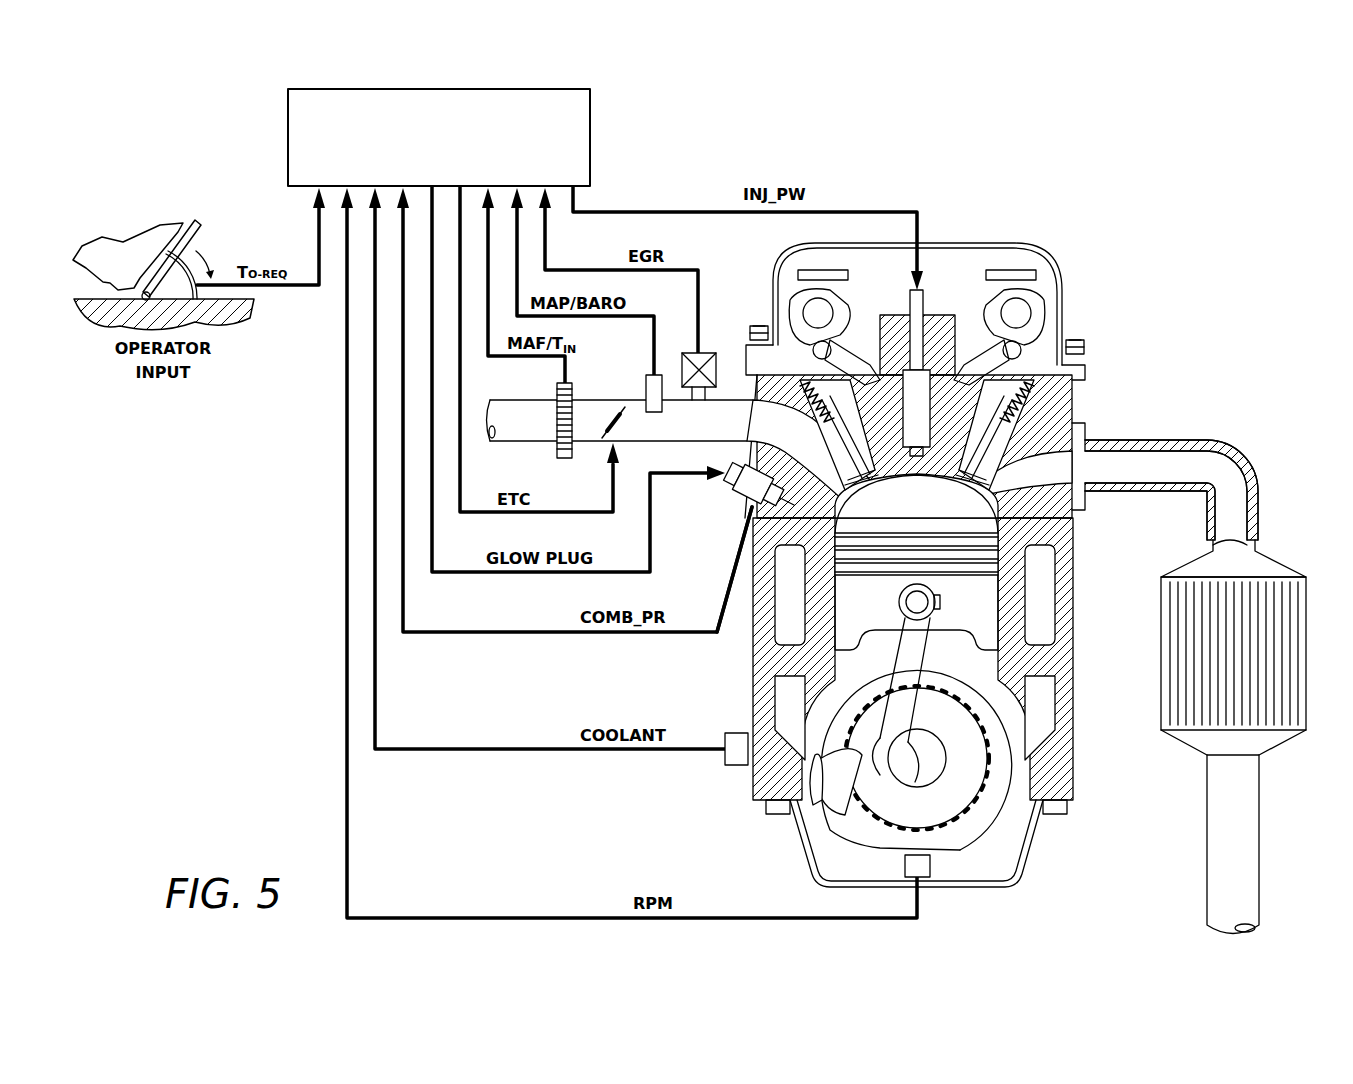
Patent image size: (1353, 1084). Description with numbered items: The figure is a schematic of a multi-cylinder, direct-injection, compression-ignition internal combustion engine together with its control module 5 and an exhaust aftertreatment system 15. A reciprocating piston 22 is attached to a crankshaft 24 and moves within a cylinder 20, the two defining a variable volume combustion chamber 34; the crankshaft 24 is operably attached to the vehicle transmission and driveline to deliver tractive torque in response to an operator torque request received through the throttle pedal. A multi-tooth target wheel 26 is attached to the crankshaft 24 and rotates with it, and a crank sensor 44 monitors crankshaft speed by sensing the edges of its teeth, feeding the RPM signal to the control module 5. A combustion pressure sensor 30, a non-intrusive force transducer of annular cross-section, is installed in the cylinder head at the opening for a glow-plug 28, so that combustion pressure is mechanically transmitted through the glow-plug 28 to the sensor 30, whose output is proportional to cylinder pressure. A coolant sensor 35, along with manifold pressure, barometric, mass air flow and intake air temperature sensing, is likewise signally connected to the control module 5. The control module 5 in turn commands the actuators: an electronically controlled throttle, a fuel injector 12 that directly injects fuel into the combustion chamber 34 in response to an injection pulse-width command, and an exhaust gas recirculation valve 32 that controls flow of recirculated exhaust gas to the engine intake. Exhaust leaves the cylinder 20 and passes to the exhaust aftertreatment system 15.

The control module 5 is at (565, 98).
The fuel injector 12 is at (920, 312).
The exhaust aftertreatment system 15 is at (1275, 572).
The cylinder 20 is at (1078, 519).
The piston 22 is at (882, 607).
The crankshaft 24 is at (1000, 762).
The multi-tooth target wheel 26 is at (963, 778).
The glow-plug 28 is at (678, 478).
The combustion pressure sensor 30 is at (682, 636).
The exhaust gas recirculation valve 32 is at (705, 353).
The combustion chamber 34 is at (927, 523).
The coolant sensor 35 is at (683, 752).
The crank sensor 44 is at (922, 866).